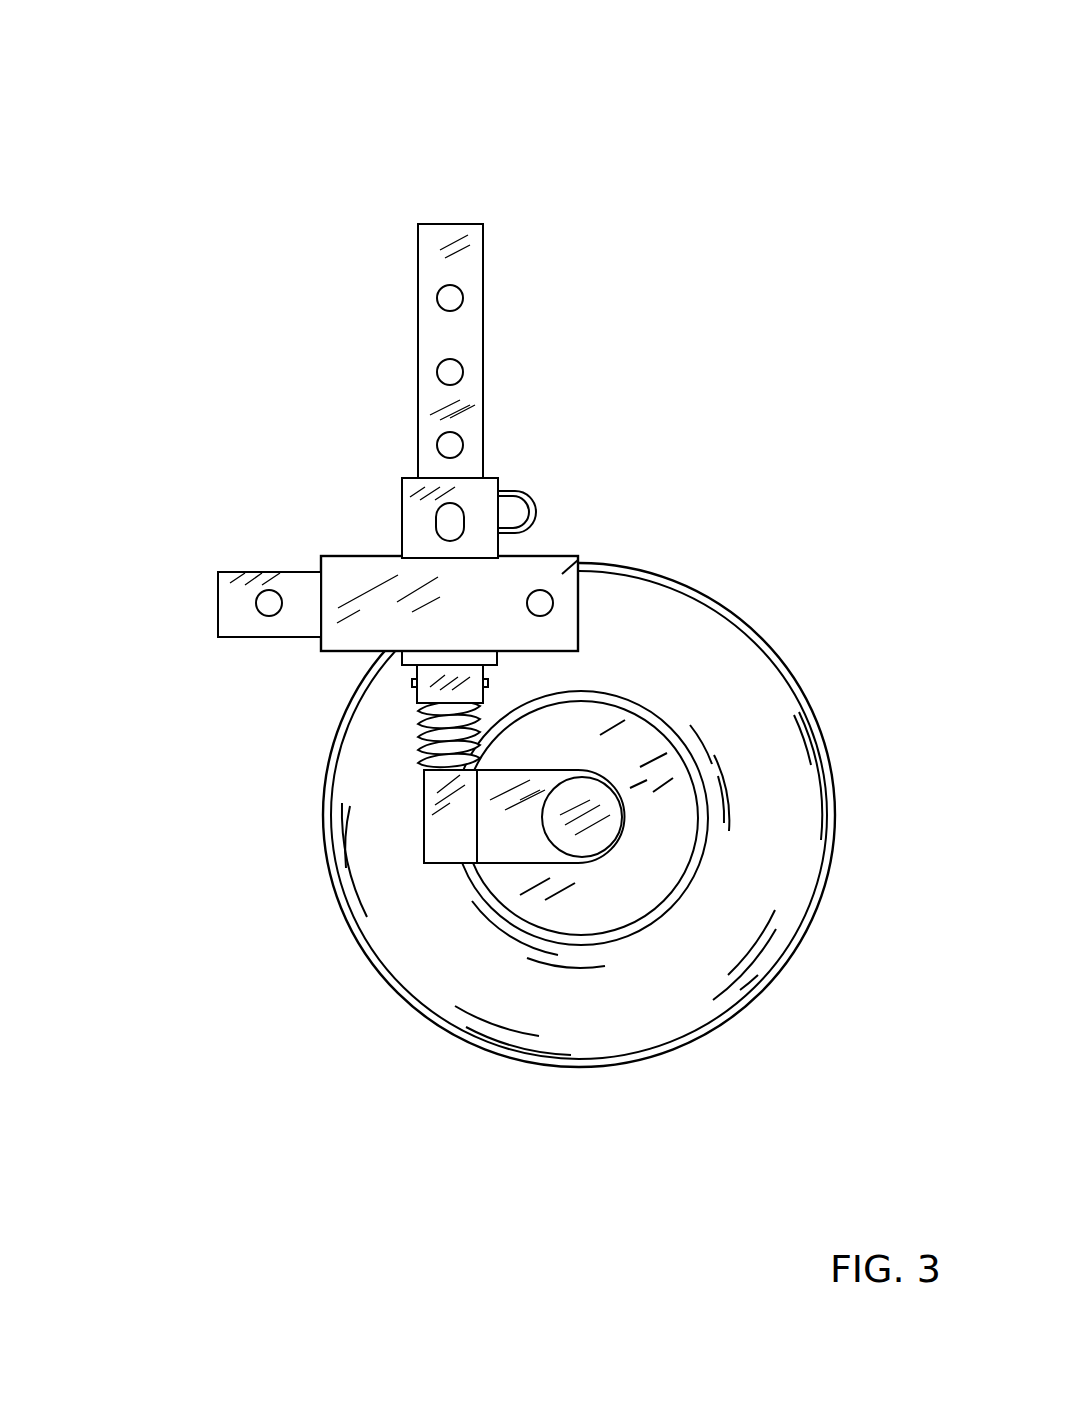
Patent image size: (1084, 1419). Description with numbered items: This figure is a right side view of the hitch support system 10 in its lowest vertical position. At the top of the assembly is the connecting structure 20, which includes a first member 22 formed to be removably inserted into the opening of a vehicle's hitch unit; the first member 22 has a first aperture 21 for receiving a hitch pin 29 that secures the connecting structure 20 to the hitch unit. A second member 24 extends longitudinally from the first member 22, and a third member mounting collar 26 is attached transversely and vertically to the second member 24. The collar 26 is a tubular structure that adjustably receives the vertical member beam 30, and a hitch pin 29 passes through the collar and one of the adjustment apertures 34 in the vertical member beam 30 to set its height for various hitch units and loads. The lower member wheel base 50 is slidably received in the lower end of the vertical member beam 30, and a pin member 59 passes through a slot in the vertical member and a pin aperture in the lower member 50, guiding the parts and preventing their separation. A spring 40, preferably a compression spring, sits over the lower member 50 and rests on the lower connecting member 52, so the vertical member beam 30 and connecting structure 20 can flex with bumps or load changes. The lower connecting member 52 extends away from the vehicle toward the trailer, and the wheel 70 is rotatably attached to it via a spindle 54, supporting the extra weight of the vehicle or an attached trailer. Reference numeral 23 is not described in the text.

The hitch support system 10 is at (526, 641).
The connecting structure 20 is at (566, 487).
The first aperture 21 is at (267, 605).
The first member 22 is at (218, 632).
The hole 23 is at (540, 603).
The second member 24 is at (568, 568).
The third member mounting collar 26 is at (591, 432).
The hitch pin 29 is at (452, 520).
The vertical member beam 30 is at (561, 253).
The adjustment apertures 34 is at (455, 298).
The spring 40 is at (423, 767).
The lower member wheel base 50 is at (443, 847).
The lower connecting member 52 is at (507, 850).
The spindle 54 is at (602, 830).
The pin member 59 is at (415, 683).
The wheel 70 is at (668, 1012).